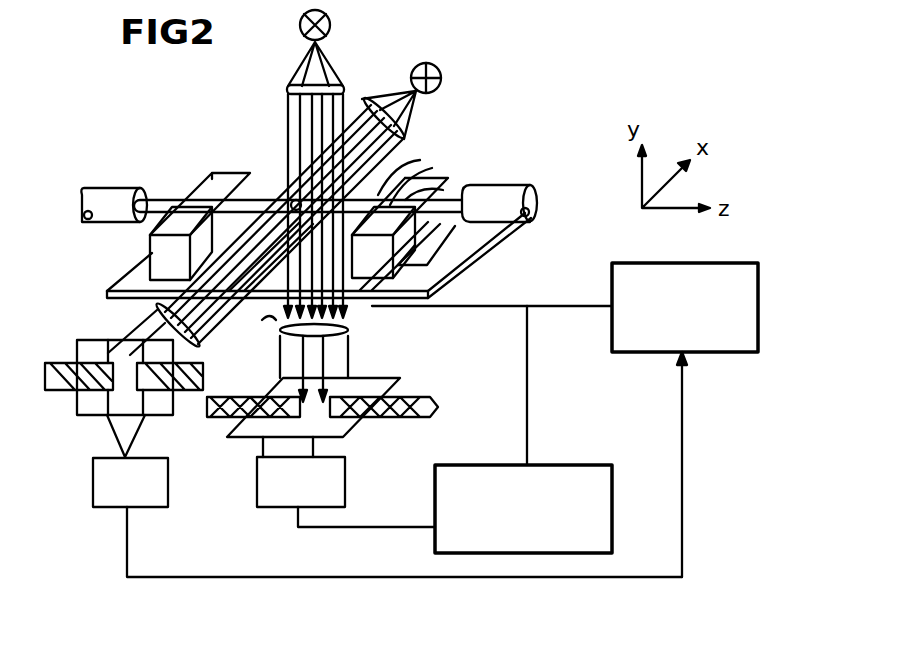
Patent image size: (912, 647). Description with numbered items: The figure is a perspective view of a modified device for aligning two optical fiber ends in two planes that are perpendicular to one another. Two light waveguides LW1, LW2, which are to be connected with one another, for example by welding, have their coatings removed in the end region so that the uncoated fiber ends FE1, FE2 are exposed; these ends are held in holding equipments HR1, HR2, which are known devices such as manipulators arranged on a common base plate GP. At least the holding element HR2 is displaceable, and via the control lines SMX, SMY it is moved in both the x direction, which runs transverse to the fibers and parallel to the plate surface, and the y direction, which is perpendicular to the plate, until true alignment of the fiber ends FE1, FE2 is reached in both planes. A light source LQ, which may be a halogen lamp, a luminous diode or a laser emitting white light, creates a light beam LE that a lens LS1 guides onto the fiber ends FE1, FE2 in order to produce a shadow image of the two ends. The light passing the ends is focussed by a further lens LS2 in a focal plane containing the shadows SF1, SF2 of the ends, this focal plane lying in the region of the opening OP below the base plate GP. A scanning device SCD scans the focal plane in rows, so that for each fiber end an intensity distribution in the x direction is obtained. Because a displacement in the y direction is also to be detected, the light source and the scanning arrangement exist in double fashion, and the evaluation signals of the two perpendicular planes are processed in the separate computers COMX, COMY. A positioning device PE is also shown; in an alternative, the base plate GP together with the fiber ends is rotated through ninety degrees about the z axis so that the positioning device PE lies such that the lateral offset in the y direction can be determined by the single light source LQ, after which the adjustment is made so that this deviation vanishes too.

The light source LQ is at (302, 17).
The lens LS1 is at (290, 84).
The light beam LE is at (300, 116).
The fiber end FE1 is at (262, 196).
The fiber end FE2 is at (433, 191).
The base plate GP is at (126, 286).
The positioning device PE is at (140, 251).
The holding equipment HR1 is at (215, 184).
The holding equipment HR2 is at (458, 190).
The light waveguide LW1 is at (105, 196).
The light waveguide LW2 is at (536, 197).
The control line SMX is at (504, 282).
The control line SMY is at (546, 306).
The computer COMY is at (685, 307).
The computer COMX is at (523, 509).
The measurement signal MR is at (378, 526).
The lens LS2 is at (350, 334).
The opening OP is at (276, 306).
The shadow SF1 is at (222, 424).
The shadow SF2 is at (426, 405).
The scanning device SCD is at (257, 484).